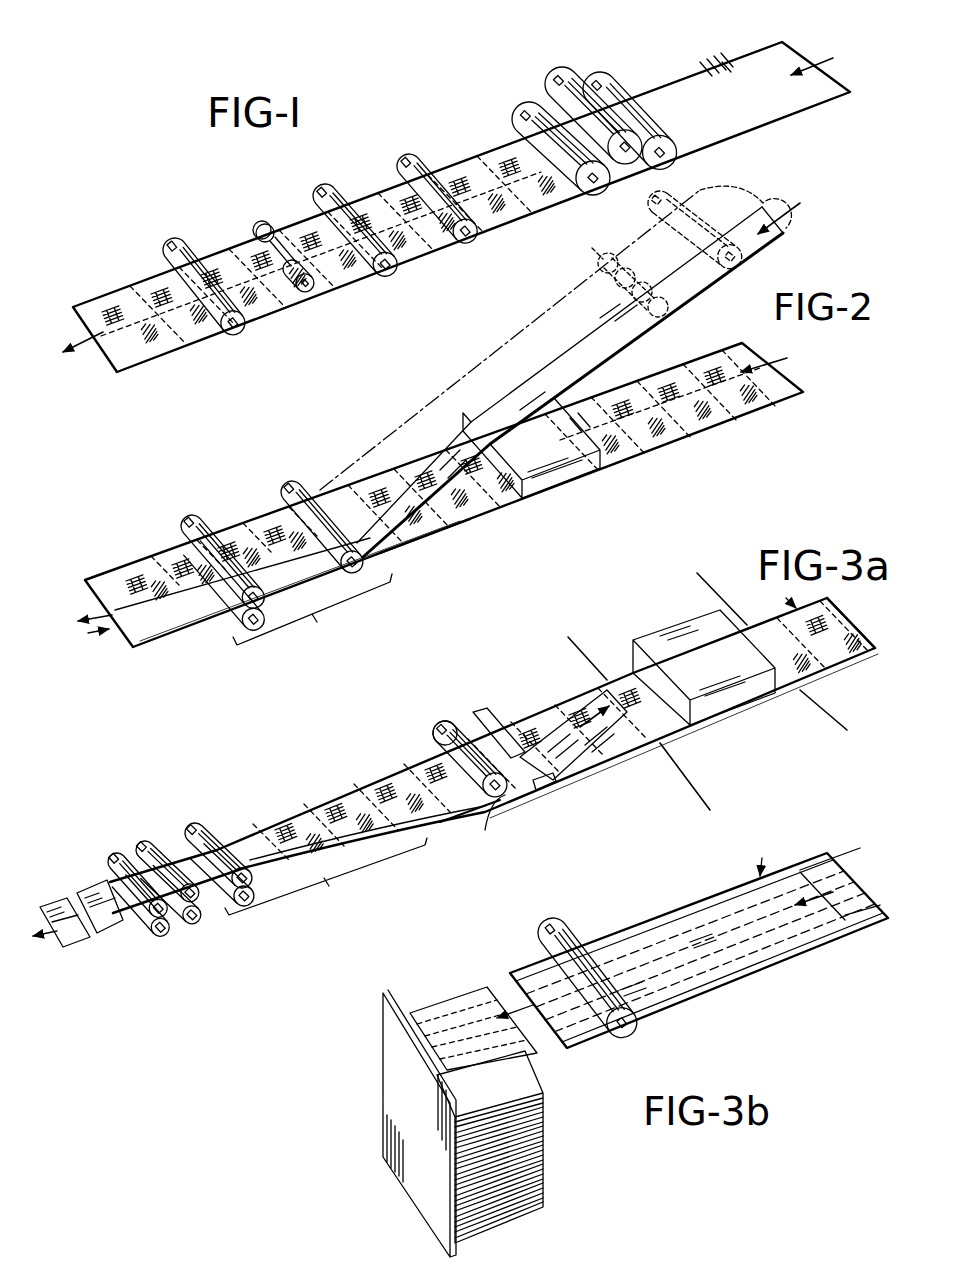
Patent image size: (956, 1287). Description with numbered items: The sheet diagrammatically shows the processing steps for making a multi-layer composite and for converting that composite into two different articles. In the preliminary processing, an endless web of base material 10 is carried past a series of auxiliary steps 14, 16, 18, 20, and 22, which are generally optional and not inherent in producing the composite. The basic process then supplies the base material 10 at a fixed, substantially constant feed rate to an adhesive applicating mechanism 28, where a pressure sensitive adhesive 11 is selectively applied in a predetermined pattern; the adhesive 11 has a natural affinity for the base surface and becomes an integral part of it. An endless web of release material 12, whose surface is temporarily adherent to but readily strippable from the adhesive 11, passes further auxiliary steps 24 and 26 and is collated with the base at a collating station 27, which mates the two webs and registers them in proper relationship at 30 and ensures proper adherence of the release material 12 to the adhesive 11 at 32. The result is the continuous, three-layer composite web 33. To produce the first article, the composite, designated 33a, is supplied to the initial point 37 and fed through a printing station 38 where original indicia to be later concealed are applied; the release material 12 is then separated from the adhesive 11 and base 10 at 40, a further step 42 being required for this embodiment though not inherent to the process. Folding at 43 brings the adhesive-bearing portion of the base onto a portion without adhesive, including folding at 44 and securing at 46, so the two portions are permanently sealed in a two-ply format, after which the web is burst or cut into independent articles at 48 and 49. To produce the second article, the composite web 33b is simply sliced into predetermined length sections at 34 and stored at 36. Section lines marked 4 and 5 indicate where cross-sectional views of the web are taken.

In FIG. 1, the base material 10 is at (672, 90).
In FIG. 2, the base material 10 is at (718, 424).
In FIG. 3A, the base material 10 is at (367, 782).
In FIG. 3B, the base material 10 is at (682, 998).
In FIG. 2, the pressure sensitive adhesive 11 is at (420, 539).
In FIG. 3A, the pressure sensitive adhesive 11 is at (461, 811).
In FIG. 3B, the pressure sensitive adhesive 11 is at (841, 899).
In FIG. 2, the release material 12 is at (684, 311).
In FIG. 3A, the release material 12 is at (637, 734).
In FIG. 3B, the release material 12 is at (762, 953).
In FIG. 1, the auxiliary preliminary step 14 is at (590, 72).
In FIG. 1, the auxiliary preliminary step 16 is at (400, 160).
In FIG. 1, the auxiliary preliminary step 18 is at (316, 189).
In FIG. 1, the auxiliary preliminary step 20 is at (254, 226).
In FIG. 1, the auxiliary preliminary step 22 is at (169, 244).
In FIG. 2, the auxiliary preliminary step 24 is at (653, 197).
In FIG. 2, the auxiliary preliminary step 26 is at (598, 252).
In FIG. 2, the collating station 27 is at (312, 611).
In FIG. 2, the adhesive applicating mechanism 28 is at (539, 489).
In FIG. 2, the registering step 30 is at (285, 489).
In FIG. 2, the adherence-ensuring step 32 is at (187, 525).
In FIG. 2, the composite web 33 is at (86, 638).
In FIG. 3A, the composite web 33a is at (768, 605).
In FIG. 3B, the composite web 33b is at (762, 855).
In FIG. 3B, the slicing step 34 is at (546, 926).
In FIG. 3B, the storing step 36 is at (393, 1031).
In FIG. 3A, the initial point 37 is at (828, 622).
In FIG. 3A, the printing station 38 is at (750, 701).
In FIG. 3A, the separating step 40 is at (540, 789).
In FIG. 3A, the processing step 42 is at (431, 722).
In FIG. 3A, the folding step 43 is at (326, 876).
In FIG. 3A, the folding point 44 is at (317, 858).
In FIG. 3A, the securing point 46 is at (184, 826).
In FIG. 3A, the bursting station 48 is at (205, 922).
In FIG. 3A, the bursting station 49 is at (162, 932).
In FIG. 3A, the section line 4- 4 is at (714, 590).
In FIG. 3A, the section line 5- 5 is at (580, 640).